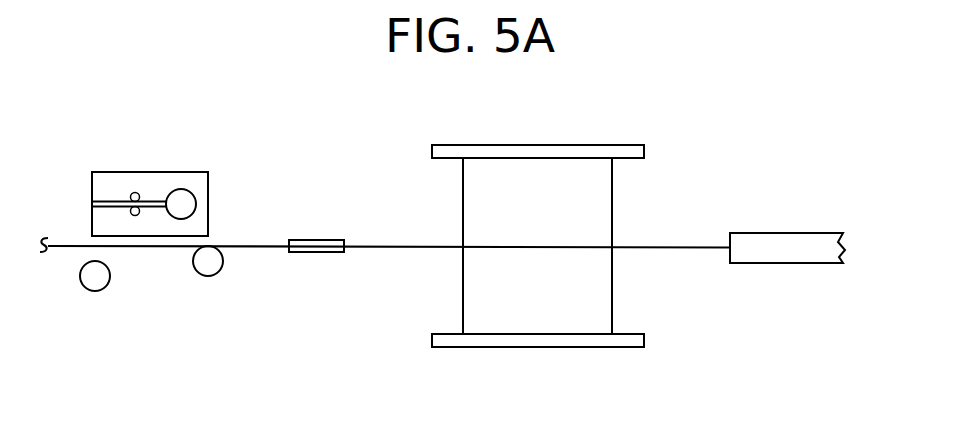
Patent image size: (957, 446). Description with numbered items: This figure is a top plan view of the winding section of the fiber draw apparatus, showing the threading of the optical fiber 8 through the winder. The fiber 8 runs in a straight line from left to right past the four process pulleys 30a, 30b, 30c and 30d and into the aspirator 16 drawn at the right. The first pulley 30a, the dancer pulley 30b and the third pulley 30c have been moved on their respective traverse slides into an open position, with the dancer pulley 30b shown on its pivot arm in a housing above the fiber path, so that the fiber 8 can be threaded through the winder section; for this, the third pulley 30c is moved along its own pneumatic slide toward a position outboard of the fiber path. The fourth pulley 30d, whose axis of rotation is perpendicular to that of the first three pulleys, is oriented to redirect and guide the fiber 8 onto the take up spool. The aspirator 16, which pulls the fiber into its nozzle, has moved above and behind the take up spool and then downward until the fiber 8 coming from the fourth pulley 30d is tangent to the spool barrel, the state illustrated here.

The fiber 8 is at (648, 247).
The aspirator 16 is at (787, 255).
The first pulley 30a is at (93, 292).
The dancer pulley 30b is at (180, 188).
The third pulley 30c is at (210, 276).
The fourth pulley 30d is at (318, 253).